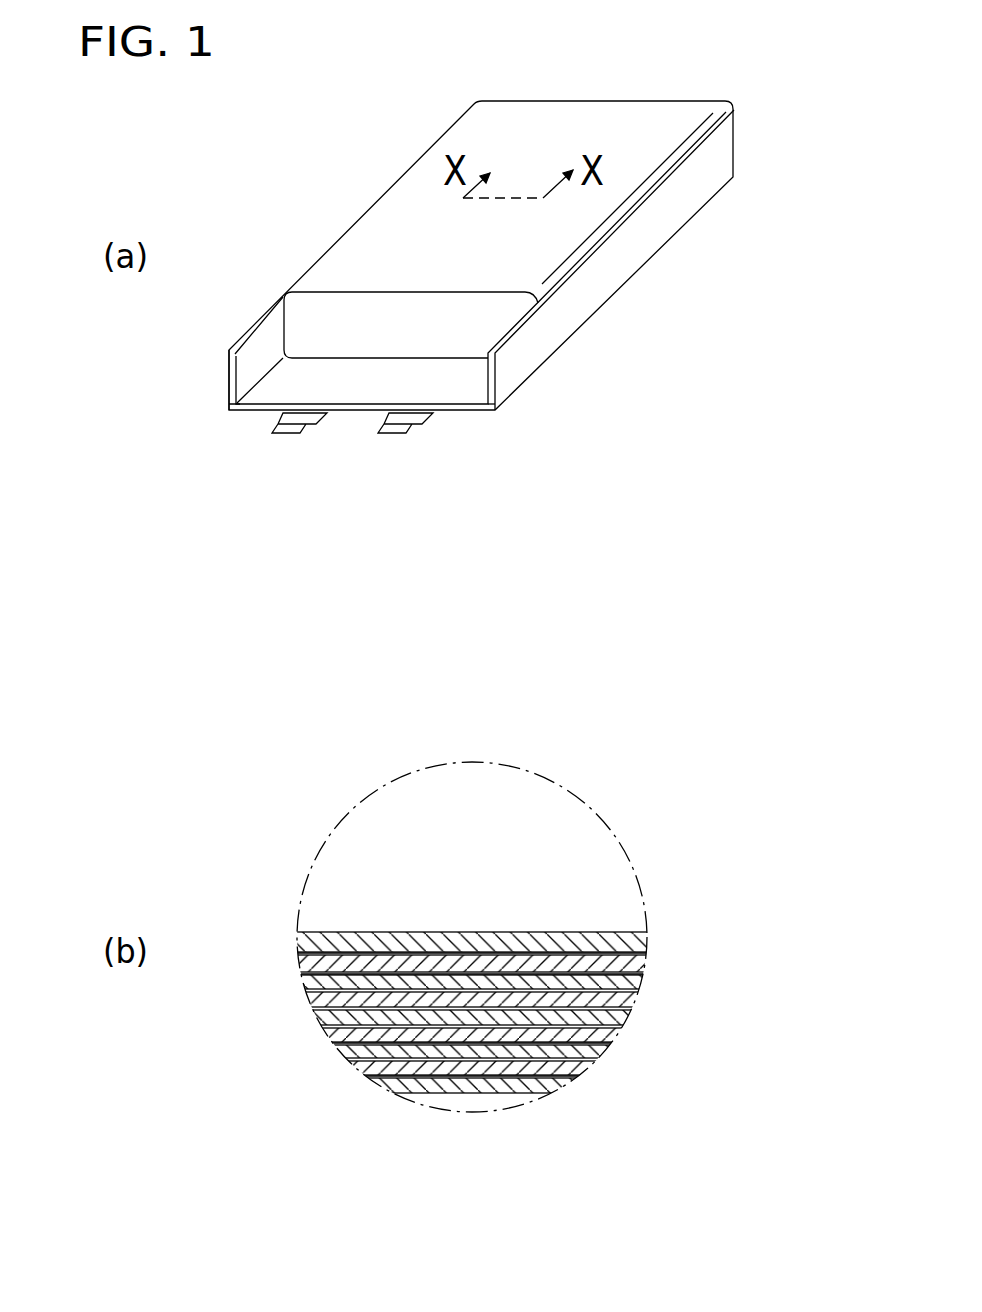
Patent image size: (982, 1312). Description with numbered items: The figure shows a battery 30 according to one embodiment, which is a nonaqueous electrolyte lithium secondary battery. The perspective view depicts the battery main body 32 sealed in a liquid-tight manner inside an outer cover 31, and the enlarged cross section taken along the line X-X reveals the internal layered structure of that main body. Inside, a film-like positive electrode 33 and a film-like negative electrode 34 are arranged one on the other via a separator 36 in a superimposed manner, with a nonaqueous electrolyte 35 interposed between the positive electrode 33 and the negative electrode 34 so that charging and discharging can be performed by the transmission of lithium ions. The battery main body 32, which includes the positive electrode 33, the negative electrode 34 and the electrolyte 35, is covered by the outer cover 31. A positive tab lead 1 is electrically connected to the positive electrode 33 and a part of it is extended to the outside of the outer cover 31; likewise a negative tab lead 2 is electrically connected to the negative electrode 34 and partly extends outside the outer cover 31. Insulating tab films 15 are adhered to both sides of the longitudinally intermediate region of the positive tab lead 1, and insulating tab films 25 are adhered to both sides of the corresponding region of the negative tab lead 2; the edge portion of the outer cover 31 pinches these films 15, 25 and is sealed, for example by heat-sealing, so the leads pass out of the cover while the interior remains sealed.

The positive tab lead 1 is at (286, 433).
The negative tab lead 2 is at (400, 433).
The insulating tab film 15 is at (275, 415).
The insulating tab film 25 is at (433, 417).
The battery 30 is at (757, 93).
The outer cover 31 is at (597, 122).
The battery main body 32 is at (410, 217).
The positive electrode 33 is at (645, 955).
The negative electrode 34 is at (625, 997).
The nonaqueous electrolyte 35 is at (298, 972).
The separator 36 is at (642, 980).